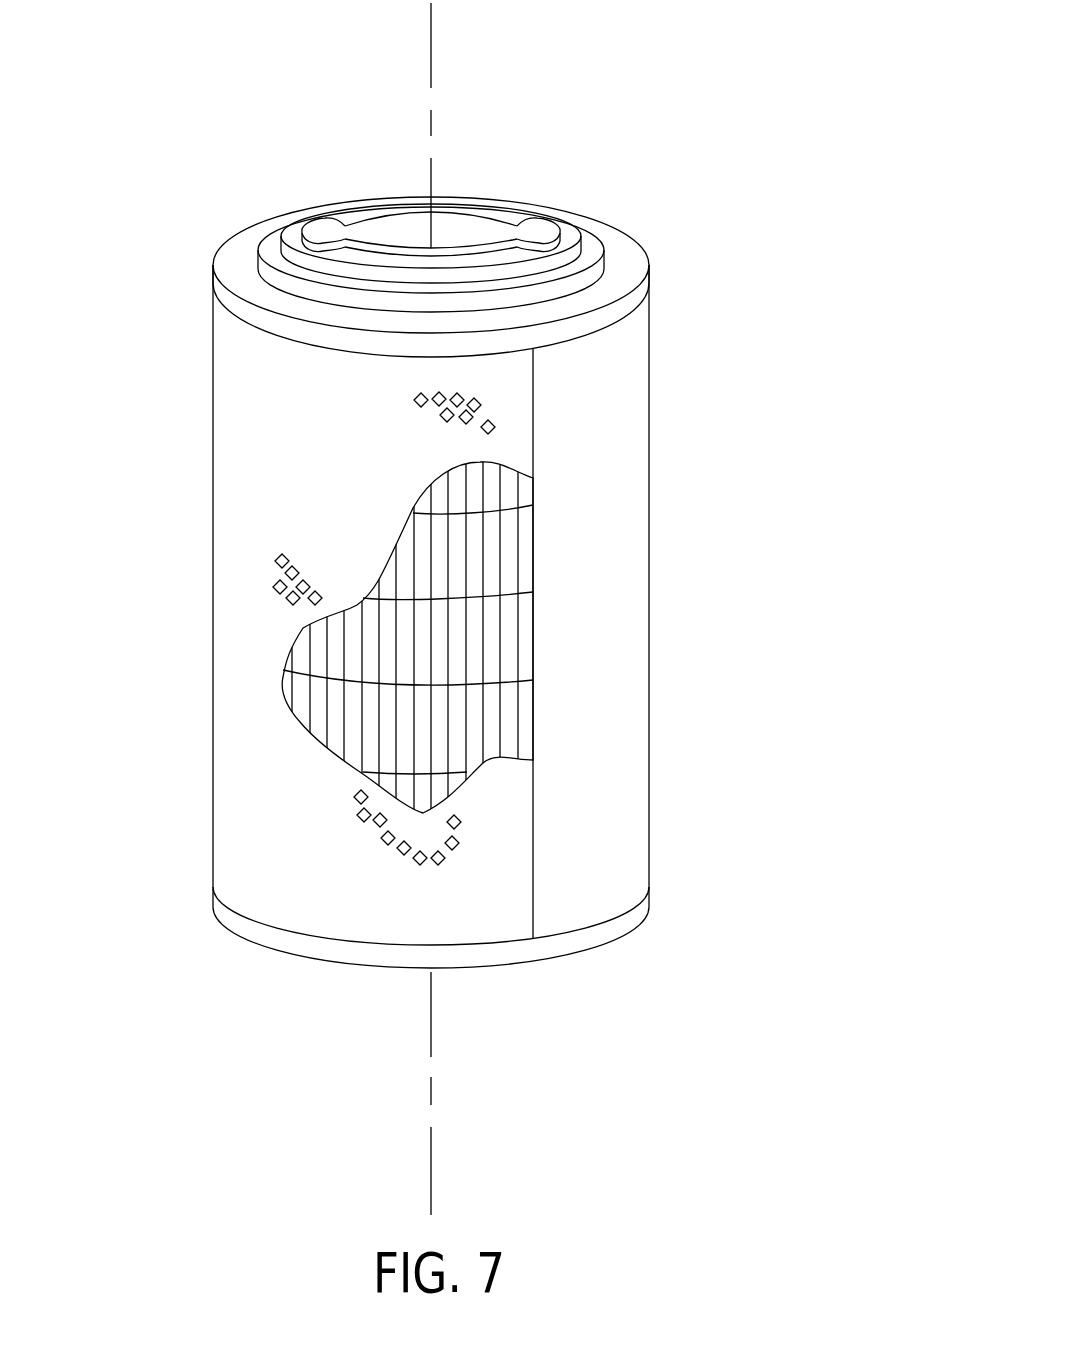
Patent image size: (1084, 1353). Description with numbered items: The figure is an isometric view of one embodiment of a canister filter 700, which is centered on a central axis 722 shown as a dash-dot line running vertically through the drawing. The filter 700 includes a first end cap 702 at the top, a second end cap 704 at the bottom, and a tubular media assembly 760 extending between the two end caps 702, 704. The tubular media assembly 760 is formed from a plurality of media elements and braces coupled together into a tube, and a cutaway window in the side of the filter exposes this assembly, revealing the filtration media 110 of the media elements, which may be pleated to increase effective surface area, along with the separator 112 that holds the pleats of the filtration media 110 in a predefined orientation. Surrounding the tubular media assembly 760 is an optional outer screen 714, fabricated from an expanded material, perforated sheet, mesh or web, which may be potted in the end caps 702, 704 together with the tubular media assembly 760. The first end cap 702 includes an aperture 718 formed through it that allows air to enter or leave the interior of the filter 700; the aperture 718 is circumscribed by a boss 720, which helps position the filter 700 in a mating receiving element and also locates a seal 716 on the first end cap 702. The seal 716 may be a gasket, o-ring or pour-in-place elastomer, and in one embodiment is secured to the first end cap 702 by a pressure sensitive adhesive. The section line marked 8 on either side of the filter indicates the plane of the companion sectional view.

The canister filter 700 is at (823, 258).
The first end cap 702 is at (613, 224).
The second end cap 704 is at (583, 950).
The outer screen 714 is at (230, 403).
The seal 716 is at (272, 268).
The aperture 718 is at (413, 212).
The boss 720 is at (488, 212).
The central axis 722 is at (430, 1022).
The tubular media assembly 760 is at (441, 617).
The filtration media 110 is at (440, 673).
The separator 112 is at (318, 695).
The section line 8- 8 is at (78, 545).